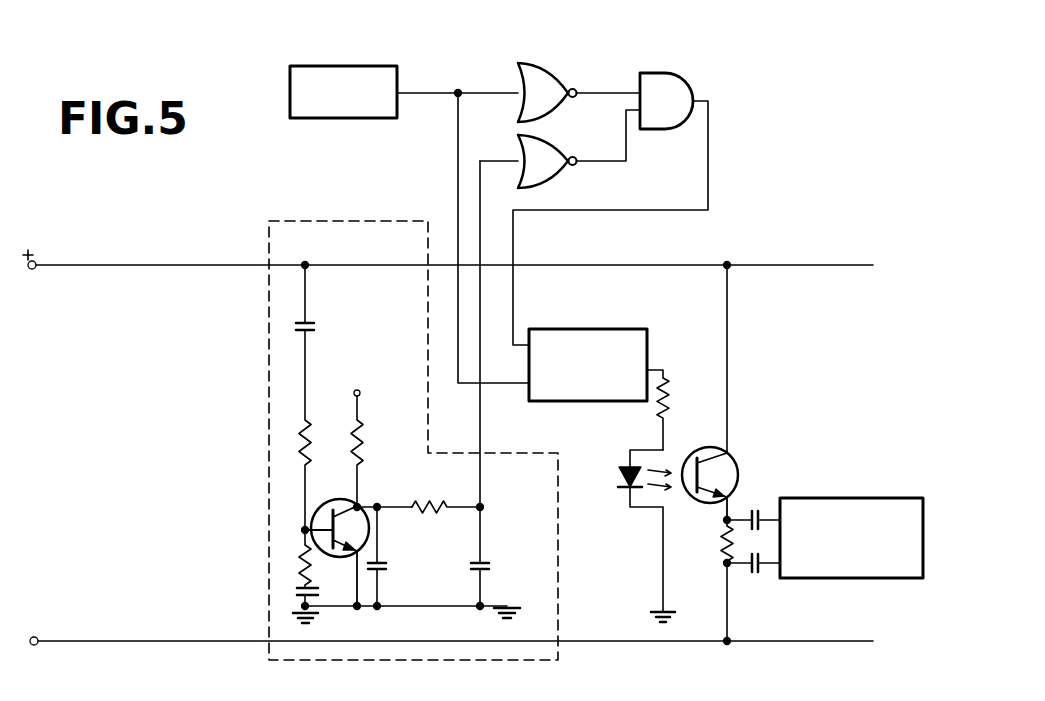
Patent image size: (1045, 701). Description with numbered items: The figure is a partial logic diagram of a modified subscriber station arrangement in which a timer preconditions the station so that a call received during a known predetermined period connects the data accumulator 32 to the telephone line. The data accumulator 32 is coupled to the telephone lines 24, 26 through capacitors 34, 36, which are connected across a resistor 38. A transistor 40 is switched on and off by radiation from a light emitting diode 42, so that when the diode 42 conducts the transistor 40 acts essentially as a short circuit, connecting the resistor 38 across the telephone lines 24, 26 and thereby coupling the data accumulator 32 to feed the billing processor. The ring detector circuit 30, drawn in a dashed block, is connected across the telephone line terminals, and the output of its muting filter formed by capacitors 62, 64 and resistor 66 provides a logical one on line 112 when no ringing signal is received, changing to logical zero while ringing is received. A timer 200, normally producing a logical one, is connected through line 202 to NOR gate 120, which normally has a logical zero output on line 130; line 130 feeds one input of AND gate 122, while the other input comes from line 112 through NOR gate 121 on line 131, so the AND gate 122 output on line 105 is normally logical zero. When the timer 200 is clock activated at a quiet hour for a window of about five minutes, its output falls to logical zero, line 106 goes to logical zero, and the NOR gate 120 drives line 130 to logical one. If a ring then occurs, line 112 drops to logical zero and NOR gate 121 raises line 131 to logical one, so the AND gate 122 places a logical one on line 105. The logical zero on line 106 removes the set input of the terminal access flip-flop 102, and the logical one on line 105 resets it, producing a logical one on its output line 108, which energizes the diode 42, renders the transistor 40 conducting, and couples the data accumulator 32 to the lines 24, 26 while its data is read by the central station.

The telephone line 24 is at (33, 270).
The telephone line 26 is at (43, 622).
The ring detector circuit 30 is at (343, 210).
The data accumulator 32 is at (860, 497).
The capacitor 34 is at (757, 508).
The capacitor 36 is at (760, 568).
The resistor 38 is at (723, 530).
The transistor 40 is at (731, 458).
The light emitting diode 42 is at (641, 438).
The capacitor 62 is at (389, 547).
The capacitor 64 is at (481, 563).
The resistor 66 is at (441, 497).
The terminal access flip-flop 102 is at (630, 329).
The line 105 is at (514, 237).
The line 106 is at (458, 133).
The output line 108 is at (665, 372).
The line 112 is at (481, 436).
The NOR gate 120 is at (550, 56).
The NOR gate 121 is at (561, 129).
The AND gate 122 is at (672, 73).
The line 130 is at (624, 89).
The line 131 is at (627, 142).
The timer 200 is at (318, 66).
The line 202 is at (426, 93).